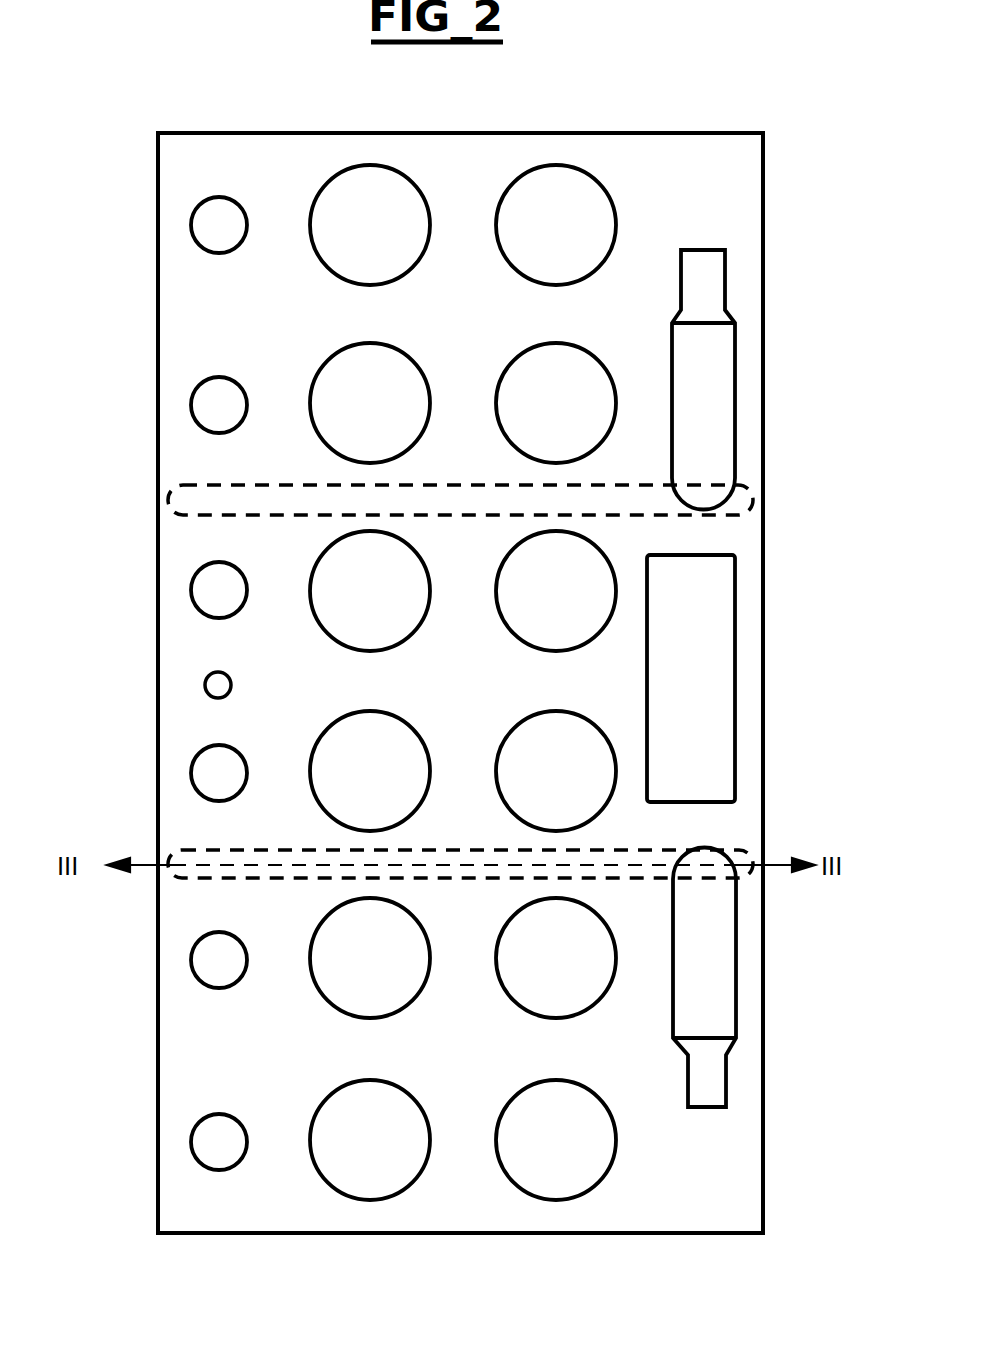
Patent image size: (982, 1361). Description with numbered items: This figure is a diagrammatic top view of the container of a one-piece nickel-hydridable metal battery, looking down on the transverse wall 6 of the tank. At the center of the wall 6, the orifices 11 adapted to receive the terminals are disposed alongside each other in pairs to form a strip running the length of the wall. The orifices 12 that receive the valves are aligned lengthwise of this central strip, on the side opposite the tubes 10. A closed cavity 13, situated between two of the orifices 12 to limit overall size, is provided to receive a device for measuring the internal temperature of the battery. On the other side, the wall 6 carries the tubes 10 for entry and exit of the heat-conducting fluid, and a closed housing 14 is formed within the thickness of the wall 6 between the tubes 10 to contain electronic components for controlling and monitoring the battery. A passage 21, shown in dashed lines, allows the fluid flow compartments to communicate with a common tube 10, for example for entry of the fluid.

The transverse wall 6 is at (707, 160).
The tubes 10 is at (707, 360).
The orifices 11 is at (525, 1170).
The orifices 12 is at (205, 1138).
The closed cavity 13 is at (215, 683).
The closed housing 14 is at (718, 752).
The passage 21 is at (218, 497).